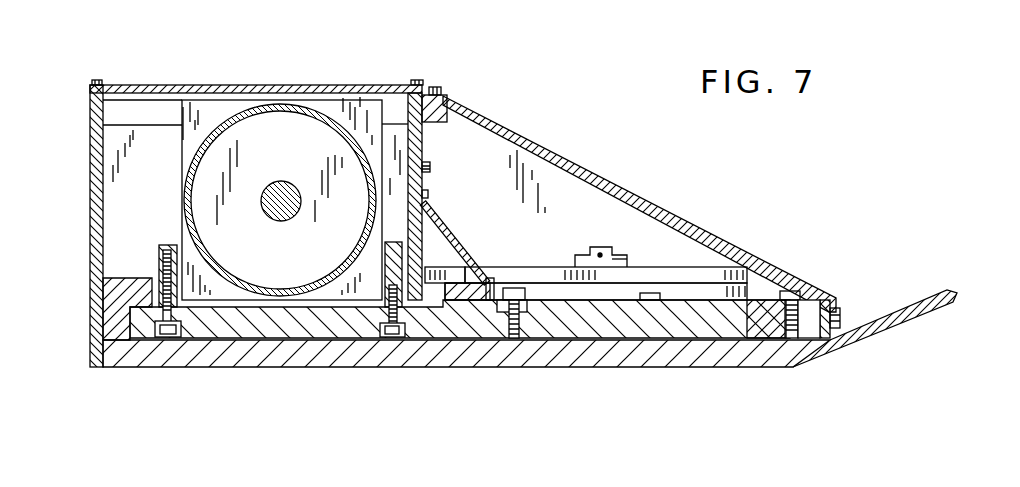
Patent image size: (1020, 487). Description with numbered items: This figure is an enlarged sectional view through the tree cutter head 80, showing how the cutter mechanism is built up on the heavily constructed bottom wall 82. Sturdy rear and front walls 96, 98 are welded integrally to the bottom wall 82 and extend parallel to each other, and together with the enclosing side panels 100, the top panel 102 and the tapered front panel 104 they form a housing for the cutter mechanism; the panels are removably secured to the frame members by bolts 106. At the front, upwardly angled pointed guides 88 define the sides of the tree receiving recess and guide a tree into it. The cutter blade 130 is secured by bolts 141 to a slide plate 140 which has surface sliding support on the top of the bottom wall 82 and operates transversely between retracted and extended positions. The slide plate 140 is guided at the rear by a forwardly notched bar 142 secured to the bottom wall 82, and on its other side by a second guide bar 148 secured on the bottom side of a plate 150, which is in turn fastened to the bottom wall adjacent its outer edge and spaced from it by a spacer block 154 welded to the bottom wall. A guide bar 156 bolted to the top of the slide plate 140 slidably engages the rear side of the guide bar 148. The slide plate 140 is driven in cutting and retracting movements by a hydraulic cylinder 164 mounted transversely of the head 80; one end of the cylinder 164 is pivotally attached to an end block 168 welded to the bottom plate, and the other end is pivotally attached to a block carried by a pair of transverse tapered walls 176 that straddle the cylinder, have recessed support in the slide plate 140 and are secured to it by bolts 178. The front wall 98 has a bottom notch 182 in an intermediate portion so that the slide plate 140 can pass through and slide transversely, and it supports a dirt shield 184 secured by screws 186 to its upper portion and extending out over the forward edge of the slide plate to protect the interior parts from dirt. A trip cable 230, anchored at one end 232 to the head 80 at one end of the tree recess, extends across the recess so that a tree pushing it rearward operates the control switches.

The tree cutter head 80 is at (594, 156).
The bottom wall 82 is at (266, 364).
The pointed guides 88 is at (914, 300).
The rear wall 96 is at (90, 212).
The front wall 98 is at (423, 140).
The side panels 100 is at (639, 195).
The top panel 102 is at (279, 85).
The front panel 104 is at (521, 124).
The bolts 106 is at (97, 80).
The cutter blade 130 is at (763, 300).
The slide plate 140 is at (452, 336).
The bolts 141 is at (793, 300).
The forwardly notched bar 142 is at (112, 306).
The second guide bar 148 is at (528, 292).
The plate 150 is at (727, 268).
The spacer block 154 is at (715, 293).
The guide bar 156 is at (460, 283).
The hydraulic cylinder 164 is at (216, 127).
The end block 168 is at (368, 112).
The transverse tapered walls 176 is at (160, 260).
The bolts 178 is at (170, 338).
The bottom notch 182 is at (414, 330).
The dirt shield 184 is at (440, 217).
The screws 186 is at (431, 167).
The trip cable 230 is at (600, 254).
The anchored end 232 is at (627, 262).